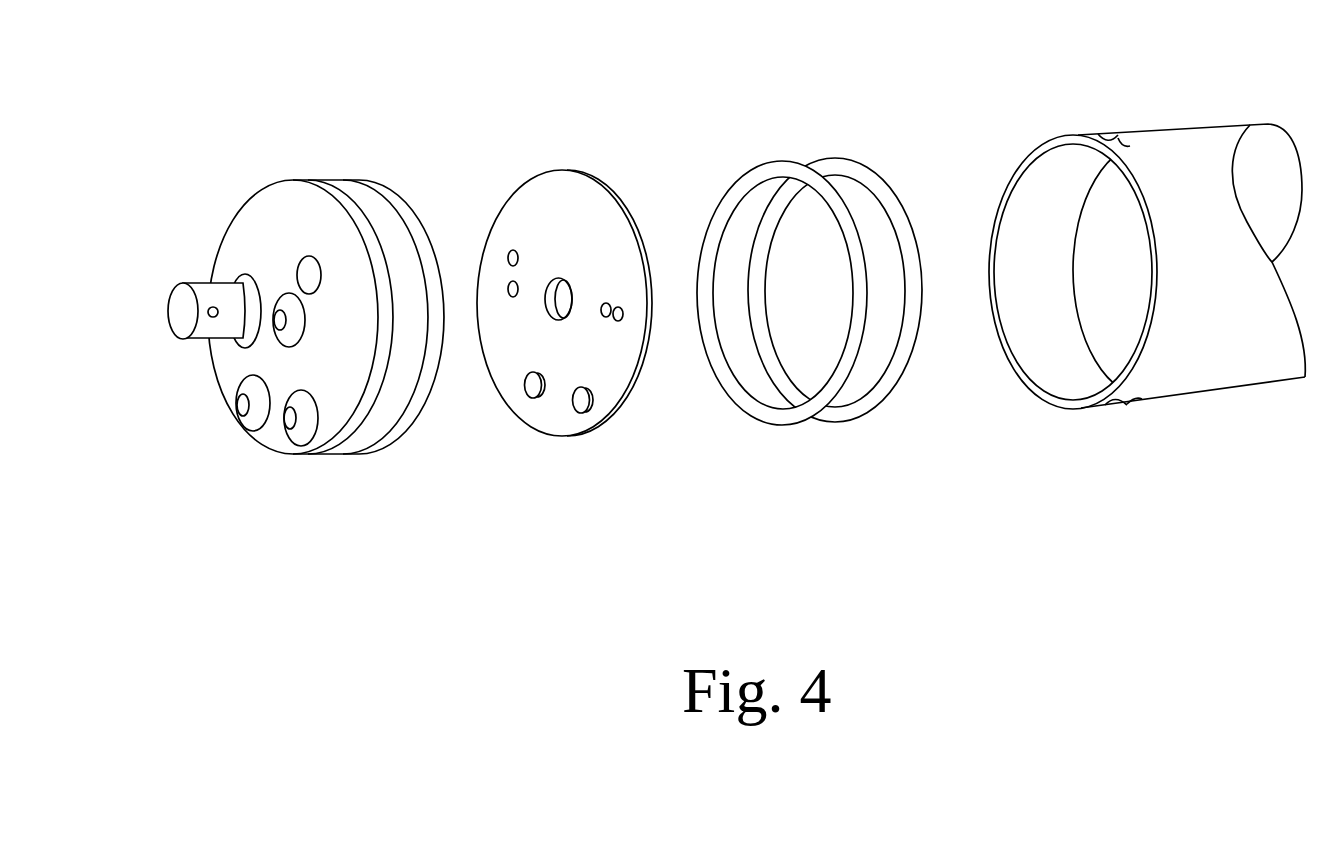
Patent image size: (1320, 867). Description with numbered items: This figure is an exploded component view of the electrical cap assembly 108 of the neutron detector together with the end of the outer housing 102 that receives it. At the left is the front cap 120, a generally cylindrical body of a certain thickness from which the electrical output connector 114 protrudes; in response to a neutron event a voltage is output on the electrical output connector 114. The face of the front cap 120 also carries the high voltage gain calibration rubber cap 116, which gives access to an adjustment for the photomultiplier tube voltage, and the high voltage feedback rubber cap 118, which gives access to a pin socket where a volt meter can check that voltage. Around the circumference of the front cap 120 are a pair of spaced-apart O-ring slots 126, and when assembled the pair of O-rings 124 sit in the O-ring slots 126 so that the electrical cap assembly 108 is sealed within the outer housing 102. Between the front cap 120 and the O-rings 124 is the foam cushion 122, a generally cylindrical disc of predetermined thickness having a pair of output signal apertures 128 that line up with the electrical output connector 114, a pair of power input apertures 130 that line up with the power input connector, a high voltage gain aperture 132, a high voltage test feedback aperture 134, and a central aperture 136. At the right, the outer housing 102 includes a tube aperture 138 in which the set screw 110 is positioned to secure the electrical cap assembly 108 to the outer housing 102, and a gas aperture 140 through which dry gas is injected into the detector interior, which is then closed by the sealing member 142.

The outer housing 102 is at (1147, 242).
The electrical cap assembly 108 is at (536, 270).
The set screw 110 is at (1116, 437).
The electrical output connector 114 is at (197, 282).
The high voltage gain calibration rubber cap 116 is at (235, 428).
The high voltage feedback rubber cap 118 is at (285, 449).
The front cap 120 is at (326, 348).
The foam cushion 122 is at (564, 338).
The O-rings 124 is at (809, 324).
The O-ring slots 126 is at (366, 290).
The output signal apertures 128 is at (552, 248).
The power input apertures 130 is at (644, 260).
The high voltage gain aperture 132 is at (499, 417).
The high voltage test feedback aperture 134 is at (633, 398).
The central aperture 136 is at (567, 326).
The tube aperture 138 is at (1168, 386).
The gas aperture 140 is at (1149, 161).
The sealing member 142 is at (1109, 104).